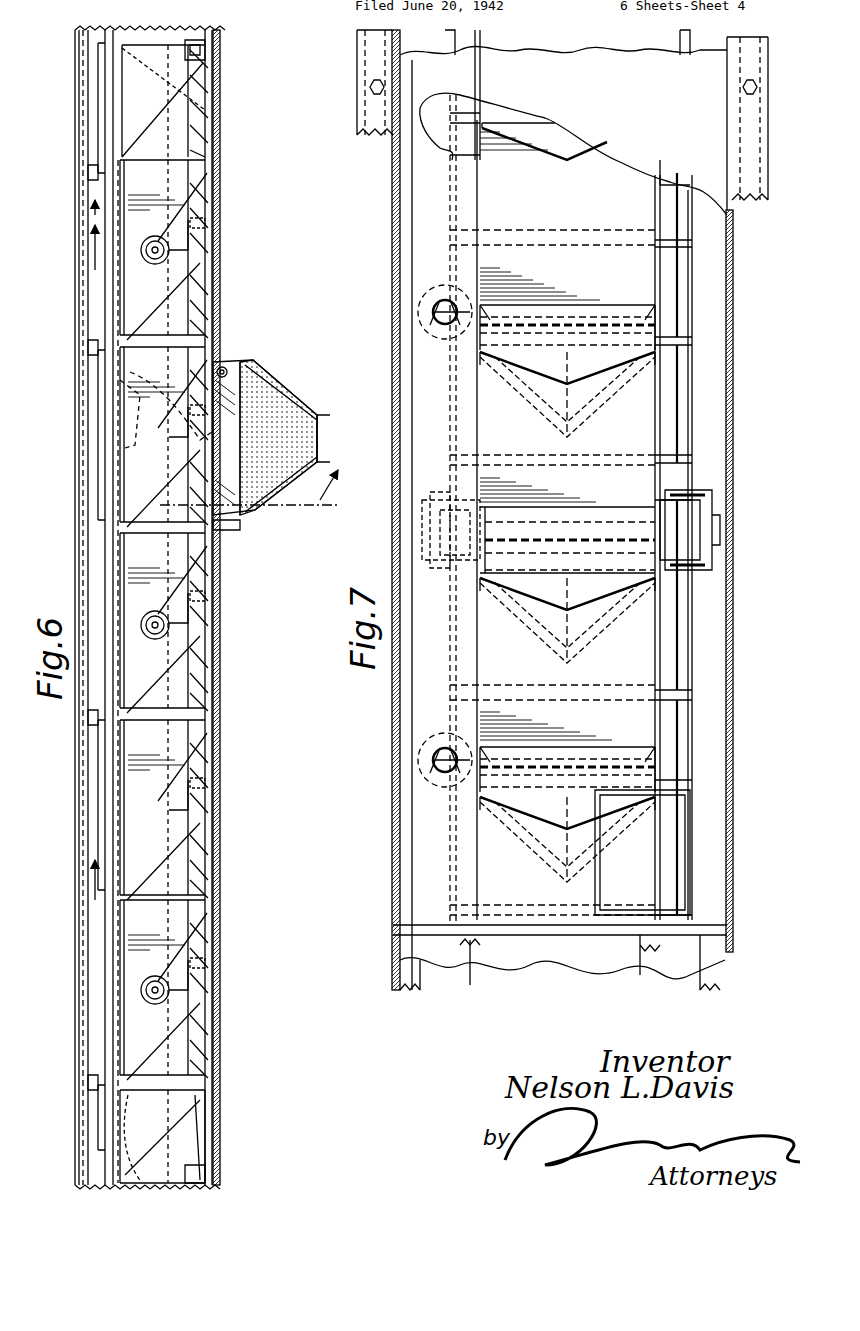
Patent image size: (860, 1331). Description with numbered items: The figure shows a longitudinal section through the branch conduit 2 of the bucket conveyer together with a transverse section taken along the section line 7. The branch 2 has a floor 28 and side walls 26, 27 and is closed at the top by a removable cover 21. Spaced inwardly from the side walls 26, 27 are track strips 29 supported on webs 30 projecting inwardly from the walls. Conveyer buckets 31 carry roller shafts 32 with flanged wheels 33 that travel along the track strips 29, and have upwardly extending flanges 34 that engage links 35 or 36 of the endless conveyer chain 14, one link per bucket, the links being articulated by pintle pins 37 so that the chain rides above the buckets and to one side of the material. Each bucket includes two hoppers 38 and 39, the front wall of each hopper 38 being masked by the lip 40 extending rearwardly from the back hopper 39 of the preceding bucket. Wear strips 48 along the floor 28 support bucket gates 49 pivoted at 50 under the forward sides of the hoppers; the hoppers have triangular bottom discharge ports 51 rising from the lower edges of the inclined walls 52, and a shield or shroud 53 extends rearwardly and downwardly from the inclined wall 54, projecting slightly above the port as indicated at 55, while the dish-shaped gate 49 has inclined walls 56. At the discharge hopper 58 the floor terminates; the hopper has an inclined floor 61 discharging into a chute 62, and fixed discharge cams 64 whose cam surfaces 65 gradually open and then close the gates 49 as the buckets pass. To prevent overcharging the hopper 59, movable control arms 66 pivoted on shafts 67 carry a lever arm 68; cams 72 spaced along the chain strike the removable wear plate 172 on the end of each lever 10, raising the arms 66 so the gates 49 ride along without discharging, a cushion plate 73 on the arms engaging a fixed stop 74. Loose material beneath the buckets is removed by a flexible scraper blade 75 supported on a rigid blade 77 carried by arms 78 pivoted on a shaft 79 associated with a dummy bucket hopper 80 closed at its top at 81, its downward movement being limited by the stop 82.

In FIG. 6, the branch conduit 2 is at (225, 682).
In FIG. 7, the branch conduit 2 is at (730, 592).
In FIG. 6, the section line 7 is at (82, 450).
In FIG. 6, the lever 10 is at (60, 512).
In FIG. 7, the lever 10 is at (356, 445).
In FIG. 6, the endless conveyer chain 14 is at (100, 318).
In FIG. 7, the endless conveyer chain 14 is at (430, 832).
In FIG. 6, the removable cover 21 is at (78, 175).
In FIG. 7, the removable cover 21 is at (745, 140).
In FIG. 7, the side wall 26 is at (730, 870).
In FIG. 6, the side wall 27 is at (88, 55).
In FIG. 7, the side wall 27 is at (393, 705).
In FIG. 6, the floor 28 is at (220, 818).
In FIG. 7, the floor 28 is at (602, 957).
In FIG. 7, the track strips 29 is at (690, 718).
In FIG. 6, the webs 30 is at (208, 235).
In FIG. 7, the webs 30 is at (700, 937).
In FIG. 6, the conveyer buckets 31 is at (130, 137).
In FIG. 7, the conveyer buckets 31 is at (640, 280).
In FIG. 6, the roller shafts 32 is at (150, 242).
In FIG. 7, the roller shafts 32 is at (714, 528).
In FIG. 6, the flanged wheels 33 is at (148, 262).
In FIG. 7, the flanged wheels 33 is at (700, 500).
In FIG. 6, the upwardly extending flanges 34 is at (113, 200).
In FIG. 7, the upwardly extending flanges 34 is at (488, 178).
In FIG. 6, the chain link 35 is at (102, 95).
In FIG. 7, the chain link 35 is at (420, 200).
In FIG. 6, the chain link 36 is at (105, 235).
In FIG. 7, the chain link 36 is at (420, 465).
In FIG. 6, the pintle pins 37 is at (90, 345).
In FIG. 7, the pintle pins 37 is at (435, 305).
In FIG. 6, the front bucket hopper 38 is at (160, 175).
In FIG. 7, the front bucket hopper 38 is at (640, 432).
In FIG. 6, the back bucket hopper 39 is at (200, 835).
In FIG. 7, the back bucket hopper 39 is at (640, 255).
In FIG. 6, the lip 40 is at (150, 168).
In FIG. 7, the lip 40 is at (608, 308).
In FIG. 6, the wear strips 48 is at (215, 965).
In FIG. 7, the wear strips 48 is at (477, 947).
In FIG. 6, the bucket gates 49 is at (210, 120).
In FIG. 7, the bucket gates 49 is at (670, 200).
In FIG. 6, the gate pivot 50 is at (205, 160).
In FIG. 7, the gate pivot 50 is at (660, 773).
In FIG. 7, the triangular bottom discharge ports 51 is at (548, 145).
In FIG. 7, the inclined walls 52 is at (540, 152).
In FIG. 6, the shield or shroud 53 is at (200, 105).
In FIG. 7, the shield or shroud 53 is at (530, 400).
In FIG. 7, the inclined wall 54 is at (640, 484).
In FIG. 7, the shroud projection 55 is at (560, 392).
In FIG. 7, the inclined gate walls 56 is at (500, 235).
In FIG. 6, the discharge hoppers 58 is at (318, 475).
In FIG. 6, the hopper 59 is at (240, 355).
In FIG. 6, the inclined floor 61 is at (300, 385).
In FIG. 6, the chute 62 is at (322, 410).
In FIG. 6, the fixed discharge cams 64 is at (235, 525).
In FIG. 6, the cam surfaces 65 is at (206, 445).
In FIG. 6, the movable control arms 66 is at (265, 365).
In FIG. 6, the shafts 67 is at (230, 365).
In FIG. 6, the lever arm 68 is at (150, 385).
In FIG. 6, the chain cams 72 is at (80, 395).
In FIG. 6, the cushion plate 73 is at (250, 512).
In FIG. 6, the fixed stop 74 is at (225, 525).
In FIG. 6, the scraper blade 75 is at (215, 58).
In FIG. 6, the rigid blade 77 is at (212, 72).
In FIG. 6, the arms 78 is at (205, 43).
In FIG. 6, the shaft 79 is at (200, 1090).
In FIG. 6, the dummy bucket hopper 80 is at (160, 1100).
In FIG. 6, the closed top 81 is at (140, 1120).
In FIG. 6, the stop 82 is at (190, 62).
In FIG. 6, the removable wear plate 172 is at (75, 365).